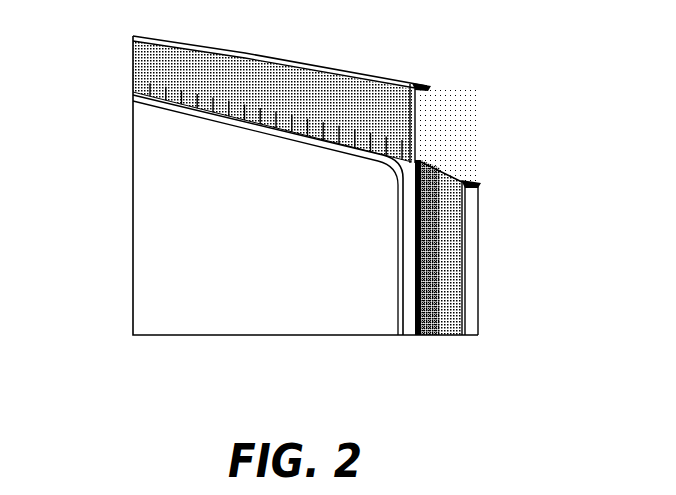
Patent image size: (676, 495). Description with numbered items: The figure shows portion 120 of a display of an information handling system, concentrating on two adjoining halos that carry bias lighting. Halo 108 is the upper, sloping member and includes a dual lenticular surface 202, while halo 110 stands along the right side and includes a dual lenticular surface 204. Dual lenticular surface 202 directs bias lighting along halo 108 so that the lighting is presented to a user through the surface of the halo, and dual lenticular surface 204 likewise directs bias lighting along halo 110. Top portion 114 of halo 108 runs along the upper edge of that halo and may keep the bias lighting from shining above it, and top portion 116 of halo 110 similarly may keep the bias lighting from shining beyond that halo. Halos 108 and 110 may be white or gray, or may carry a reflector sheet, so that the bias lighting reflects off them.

The halo 108 is at (332, 100).
The halo 110 is at (445, 288).
The top portion 114 is at (150, 36).
The top portion 116 is at (468, 232).
The portion 120 is at (533, 407).
The dual lenticular surface 202 is at (133, 77).
The dual lenticular surface 204 is at (431, 183).